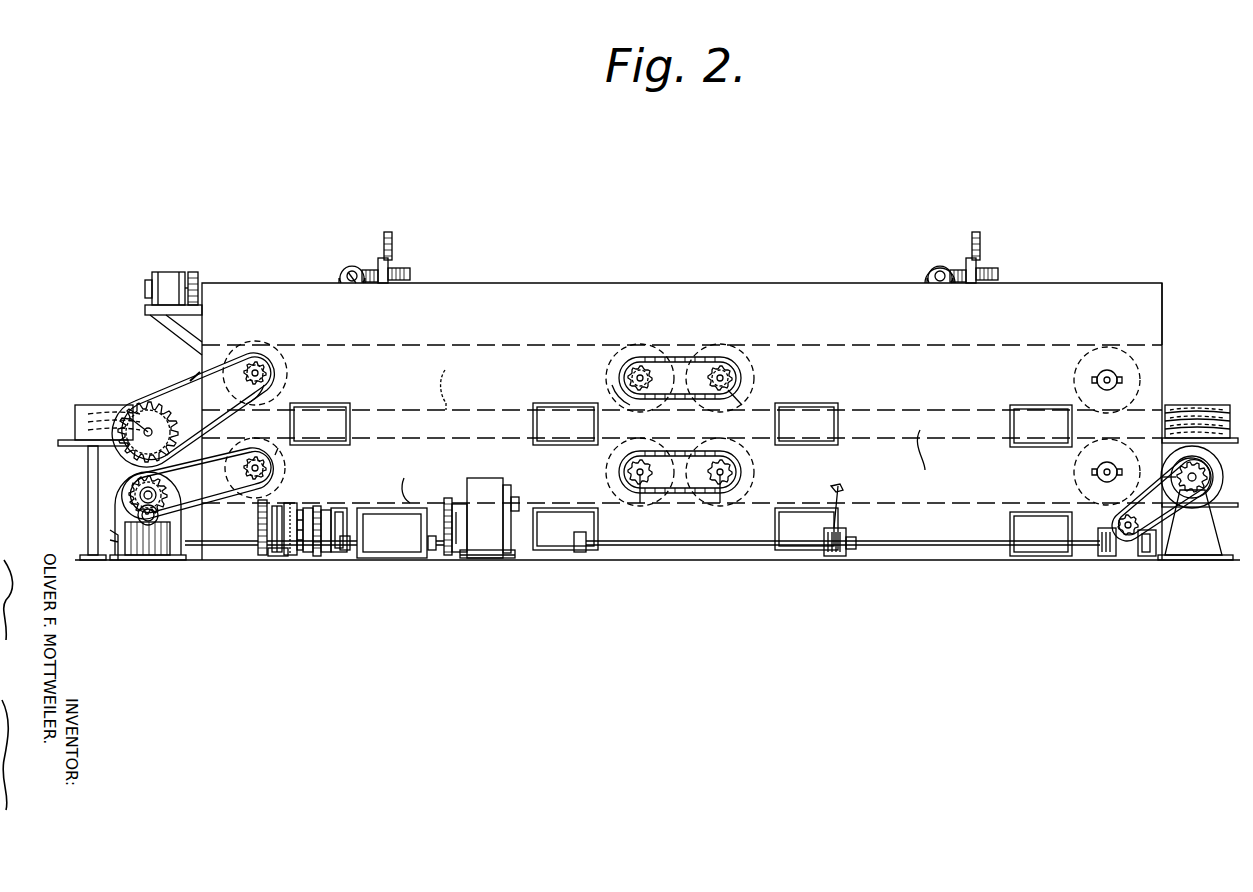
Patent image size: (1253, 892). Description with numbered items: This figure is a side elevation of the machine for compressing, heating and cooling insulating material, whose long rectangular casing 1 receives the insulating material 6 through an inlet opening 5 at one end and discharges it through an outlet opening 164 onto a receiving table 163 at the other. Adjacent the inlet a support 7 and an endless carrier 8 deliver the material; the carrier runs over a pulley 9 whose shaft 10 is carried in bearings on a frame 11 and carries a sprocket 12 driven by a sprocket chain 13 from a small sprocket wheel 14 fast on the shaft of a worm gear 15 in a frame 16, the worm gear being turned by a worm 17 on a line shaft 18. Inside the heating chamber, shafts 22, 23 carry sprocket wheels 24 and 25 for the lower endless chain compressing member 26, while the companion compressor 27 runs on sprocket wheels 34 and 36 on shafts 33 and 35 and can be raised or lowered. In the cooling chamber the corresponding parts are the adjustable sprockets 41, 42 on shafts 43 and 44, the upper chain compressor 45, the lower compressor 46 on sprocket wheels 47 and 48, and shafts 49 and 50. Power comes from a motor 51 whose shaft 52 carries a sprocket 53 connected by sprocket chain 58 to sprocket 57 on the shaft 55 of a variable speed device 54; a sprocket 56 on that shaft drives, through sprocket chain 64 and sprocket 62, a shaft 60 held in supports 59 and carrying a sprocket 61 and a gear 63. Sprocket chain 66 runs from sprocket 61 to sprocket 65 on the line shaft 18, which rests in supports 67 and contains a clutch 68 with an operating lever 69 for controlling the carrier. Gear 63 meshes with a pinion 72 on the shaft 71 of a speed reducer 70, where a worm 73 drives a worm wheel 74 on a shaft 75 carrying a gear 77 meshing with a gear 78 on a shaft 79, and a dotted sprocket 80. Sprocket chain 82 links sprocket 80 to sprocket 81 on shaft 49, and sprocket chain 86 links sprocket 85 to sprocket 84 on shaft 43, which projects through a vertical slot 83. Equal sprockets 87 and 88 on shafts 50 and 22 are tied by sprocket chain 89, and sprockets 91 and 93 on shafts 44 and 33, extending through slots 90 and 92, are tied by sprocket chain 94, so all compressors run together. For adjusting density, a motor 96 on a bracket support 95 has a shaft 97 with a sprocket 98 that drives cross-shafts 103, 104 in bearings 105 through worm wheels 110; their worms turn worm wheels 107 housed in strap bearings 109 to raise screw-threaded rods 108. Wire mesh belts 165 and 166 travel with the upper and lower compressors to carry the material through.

The casing 1 is at (546, 300).
The inlet opening 5 is at (1188, 405).
The insulating material 6 is at (1212, 405).
The support 7 is at (1162, 440).
The endless carrier 8 is at (1226, 500).
The pulley 9 is at (1163, 462).
The shaft 10 is at (1220, 508).
The frame 11 is at (1196, 560).
The sprocket 12 is at (1184, 520).
The sprocket chain 13 is at (1150, 486).
The small sprocket wheel 14 is at (1170, 490).
The worm gear 15 is at (1117, 522).
The frame 16 is at (1103, 556).
The worm 17 is at (1128, 538).
The line shaft 18 is at (928, 546).
The shaft 22 is at (720, 503).
The shaft 23 is at (1074, 468).
The sprocket wheel 24 is at (748, 484).
The sprocket wheel 25 is at (1107, 440).
The endless chain compressing member 26 is at (938, 503).
The companion compressor 27 is at (870, 345).
The shaft 33 is at (742, 370).
The sprocket wheel 34 is at (752, 380).
The shaft 35 is at (1098, 378).
The sprocket wheel 36 is at (1104, 347).
The adjustable sprocket 41 is at (290, 390).
The adjustable sprocket 42 is at (612, 352).
The shaft 43 is at (276, 366).
The shaft 44 is at (632, 376).
The upper chain compressor 45 is at (445, 379).
The lower compressor 46 is at (405, 478).
The sprocket wheel 47 is at (270, 447).
The sprocket wheel 48 is at (608, 480).
The shaft 49 is at (266, 468).
The shaft 50 is at (640, 503).
The motor 51 is at (490, 482).
The shaft 52 is at (518, 500).
The sprocket 53 is at (446, 498).
The variable speed device 54 is at (396, 560).
The shaft 55 is at (434, 550).
The sprocket 56 is at (326, 556).
The sprocket 57 is at (458, 556).
The sprocket chain 58 is at (460, 502).
The support 59 is at (310, 506).
The shaft 60 is at (312, 508).
The sprocket 61 is at (292, 503).
The sprocket 62 is at (344, 508).
The gear 63 is at (258, 516).
The sprocket chain 64 is at (320, 556).
The sprocket 65 is at (298, 556).
The sprocket chain 66 is at (302, 556).
The support 67 is at (582, 552).
The clutch 68 is at (832, 556).
The operating lever 69 is at (842, 488).
The speed reducer 70 is at (120, 520).
The shaft 71 is at (210, 546).
The pinion 72 is at (268, 553).
The worm 73 is at (152, 556).
The worm wheel 74 is at (116, 548).
The shaft 75 is at (144, 494).
The gear 77 is at (130, 488).
The gear 78 is at (92, 404).
The shaft 79 is at (118, 420).
The sprocket 80 is at (168, 490).
The sprocket 81 is at (300, 440).
The sprocket chain 82 is at (222, 498).
The vertical slot 83 is at (255, 360).
The sprocket 84 is at (266, 374).
The sprocket 85 is at (125, 405).
The sprocket chain 86 is at (200, 380).
The sprocket 87 is at (628, 462).
The sprocket 88 is at (734, 470).
The sprocket chain 89 is at (676, 451).
The slot 90 is at (638, 366).
The sprocket 91 is at (612, 386).
The slot 92 is at (721, 366).
The sprocket 93 is at (737, 405).
The sprocket chain 94 is at (676, 357).
The bracket support 95 is at (145, 316).
The motor 96 is at (168, 275).
The shaft 97 is at (145, 286).
The sprocket 98 is at (198, 278).
The cross-shaft 103 is at (657, 294).
The cross-shaft 104 is at (930, 266).
The bearing 105 is at (346, 276).
The worm wheel 107 is at (410, 270).
The screw-threaded rod 108 is at (388, 232).
The strap bearing 109 is at (380, 262).
The worm wheel 110 is at (346, 266).
The receiving table 163 is at (62, 440).
The outlet opening 164 is at (160, 384).
The endless wire mesh belt 165 is at (516, 345).
The wire mesh belt 166 is at (440, 438).